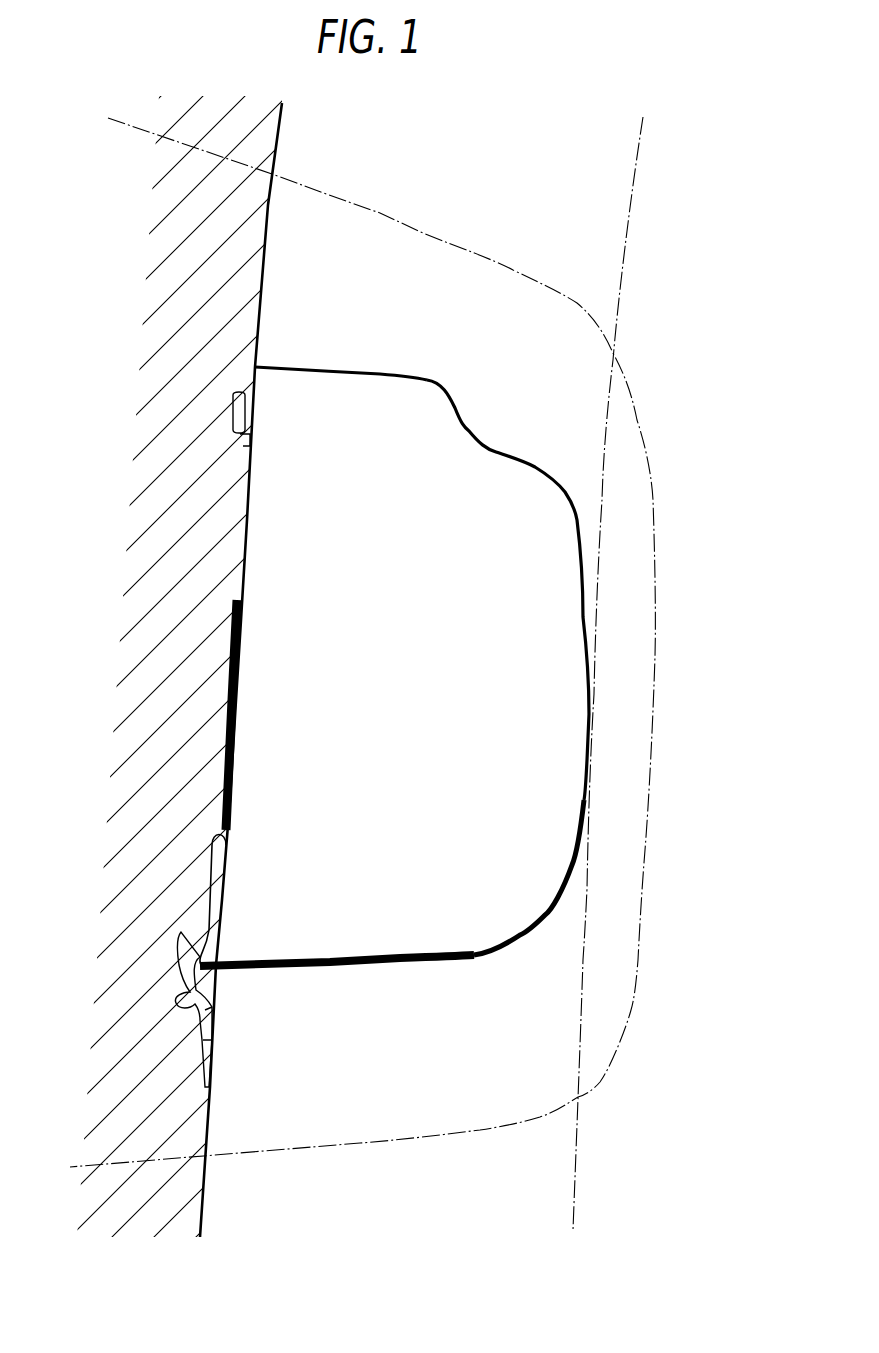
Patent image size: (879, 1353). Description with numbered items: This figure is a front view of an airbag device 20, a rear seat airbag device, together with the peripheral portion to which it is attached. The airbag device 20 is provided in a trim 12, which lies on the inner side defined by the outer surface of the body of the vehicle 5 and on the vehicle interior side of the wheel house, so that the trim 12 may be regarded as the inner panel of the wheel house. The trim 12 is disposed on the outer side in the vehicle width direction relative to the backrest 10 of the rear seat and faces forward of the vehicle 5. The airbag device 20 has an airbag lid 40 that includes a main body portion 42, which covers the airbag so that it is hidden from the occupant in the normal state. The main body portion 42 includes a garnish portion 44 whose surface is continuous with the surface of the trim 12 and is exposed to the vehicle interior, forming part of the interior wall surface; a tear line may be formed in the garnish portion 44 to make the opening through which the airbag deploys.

The vehicle 5 is at (281, 130).
The backrest 10 is at (606, 389).
The trim 12 is at (418, 253).
The airbag device 20 is at (237, 520).
The airbag lid 40 is at (477, 440).
The main body portion 42 is at (348, 390).
The garnish portion 44 is at (408, 648).